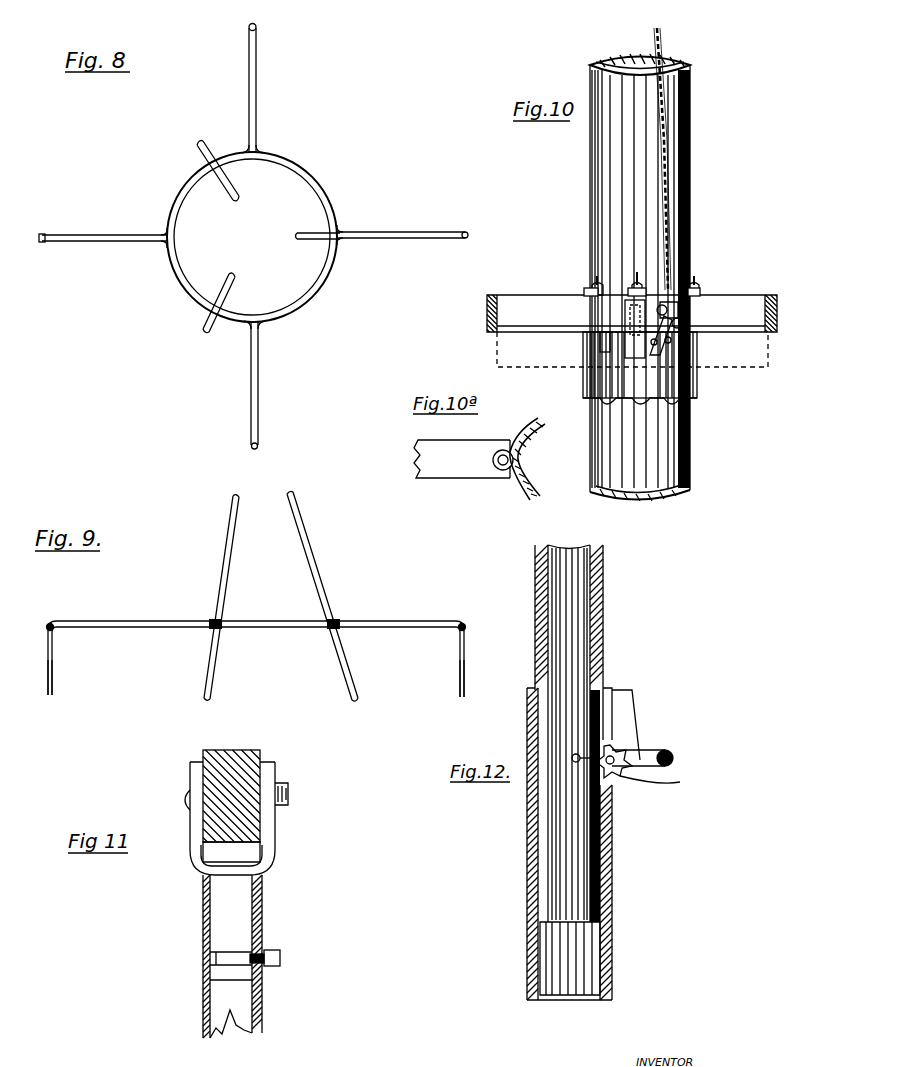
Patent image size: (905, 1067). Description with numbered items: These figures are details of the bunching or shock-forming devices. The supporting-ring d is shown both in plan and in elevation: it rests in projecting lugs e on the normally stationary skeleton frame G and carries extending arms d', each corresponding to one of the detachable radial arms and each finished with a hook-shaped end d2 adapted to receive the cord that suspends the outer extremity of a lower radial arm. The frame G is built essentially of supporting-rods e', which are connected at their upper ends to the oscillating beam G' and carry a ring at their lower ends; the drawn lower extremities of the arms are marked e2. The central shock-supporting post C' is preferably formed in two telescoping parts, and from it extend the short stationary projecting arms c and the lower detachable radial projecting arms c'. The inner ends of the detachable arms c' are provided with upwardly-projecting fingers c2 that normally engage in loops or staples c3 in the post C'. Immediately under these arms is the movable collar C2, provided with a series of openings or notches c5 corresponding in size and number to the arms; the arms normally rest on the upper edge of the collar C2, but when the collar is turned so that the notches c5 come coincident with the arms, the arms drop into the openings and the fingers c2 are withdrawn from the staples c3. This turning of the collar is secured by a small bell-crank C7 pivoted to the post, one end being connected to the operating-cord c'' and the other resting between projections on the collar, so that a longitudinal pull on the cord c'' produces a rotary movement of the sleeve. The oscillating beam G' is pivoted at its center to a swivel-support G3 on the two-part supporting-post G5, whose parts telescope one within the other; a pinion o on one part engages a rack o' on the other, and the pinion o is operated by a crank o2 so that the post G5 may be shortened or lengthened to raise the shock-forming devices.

In FIG. 8, the skeleton frame G is at (252, 237).
In FIG. 9, the skeleton frame G is at (256, 580).
In FIG. 8, the extending arms d' is at (253, 236).
In FIG. 9, the extending arms d' is at (256, 609).
In FIG. 8, the hook-shaped end d2 is at (258, 24).
In FIG. 9, the hook-shaped end d2 is at (50, 622).
In FIG. 8, the supporting-ring d is at (288, 237).
In FIG. 9, the supporting-ring d is at (272, 607).
In FIG. 8, the supporting-rods e' is at (268, 237).
In FIG. 9, the supporting-rods e' is at (295, 596).
In FIG. 9, the projecting lugs e is at (285, 637).
In FIG. 9, the arm drop ends e2 is at (52, 685).
In FIG. 10, the central post C' is at (623, 277).
In FIG. 10, the cord c'' is at (694, 159).
In FIG. 10, the detachable radial projecting arms c' is at (632, 317).
In FIG. 10, the movable collar C2 is at (590, 378).
In FIG. 10, the openings or notches c5 is at (625, 345).
In FIG. 10, the upwardly-projecting fingers c2 is at (595, 282).
In FIG. 10A, the upwardly-projecting fingers c2 is at (508, 478).
In FIG. 10, the loops or staples c3 is at (585, 292).
In FIG. 10A, the loops or staples c3 is at (498, 450).
In FIG. 10, the bell-crank C7 is at (668, 335).
In FIG. 10A, the stationary projecting arms c is at (462, 449).
In FIG. 11, the oscillating beam G' is at (238, 787).
In FIG. 11, the swivel-support G3 is at (262, 862).
In FIG. 11, the supporting-post G5 is at (205, 932).
In FIG. 12, the supporting-post G5 is at (612, 858).
In FIG. 12, the crank o2 is at (672, 752).
In FIG. 12, the pinion o is at (643, 770).
In FIG. 12, the rack o' is at (581, 750).